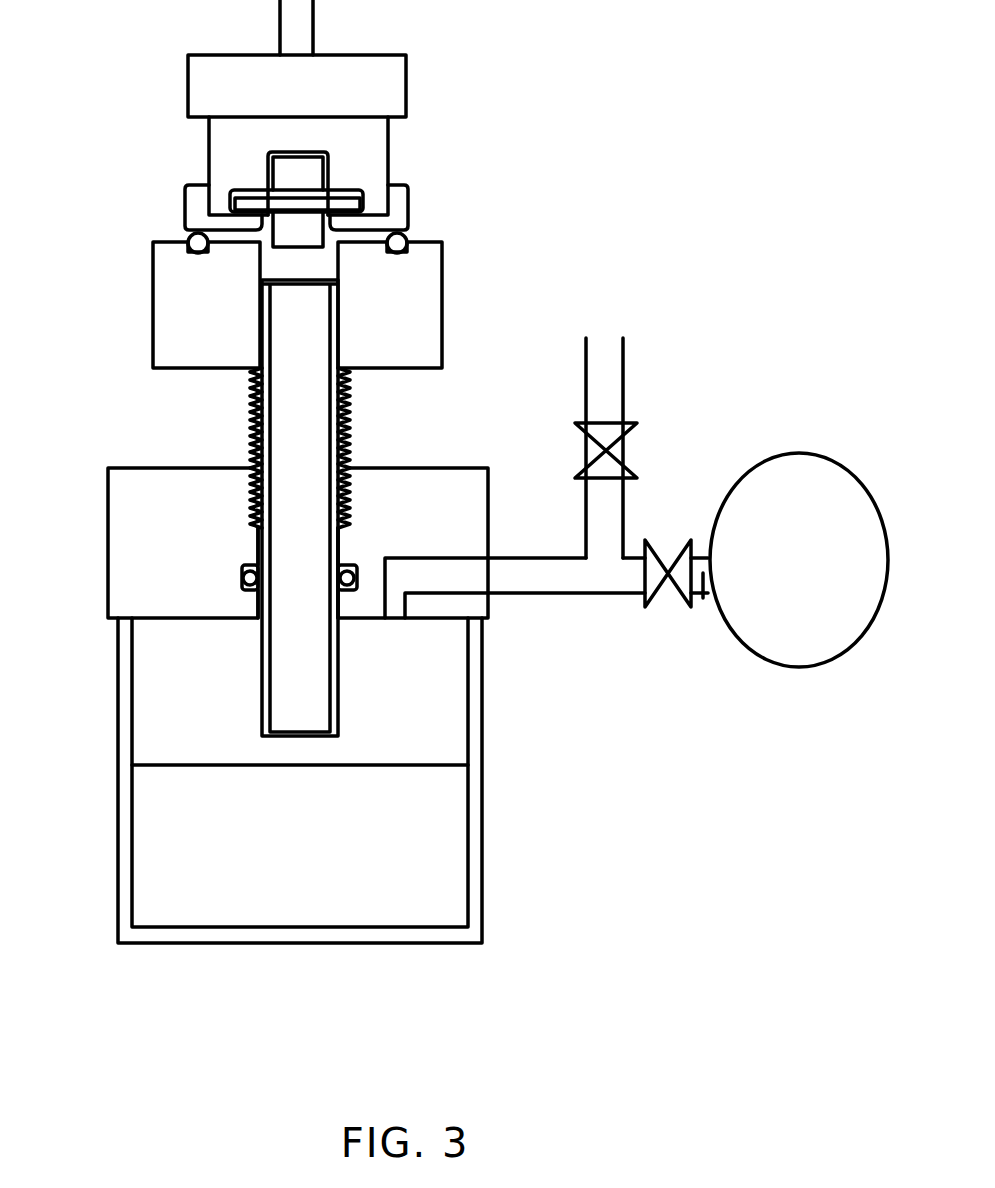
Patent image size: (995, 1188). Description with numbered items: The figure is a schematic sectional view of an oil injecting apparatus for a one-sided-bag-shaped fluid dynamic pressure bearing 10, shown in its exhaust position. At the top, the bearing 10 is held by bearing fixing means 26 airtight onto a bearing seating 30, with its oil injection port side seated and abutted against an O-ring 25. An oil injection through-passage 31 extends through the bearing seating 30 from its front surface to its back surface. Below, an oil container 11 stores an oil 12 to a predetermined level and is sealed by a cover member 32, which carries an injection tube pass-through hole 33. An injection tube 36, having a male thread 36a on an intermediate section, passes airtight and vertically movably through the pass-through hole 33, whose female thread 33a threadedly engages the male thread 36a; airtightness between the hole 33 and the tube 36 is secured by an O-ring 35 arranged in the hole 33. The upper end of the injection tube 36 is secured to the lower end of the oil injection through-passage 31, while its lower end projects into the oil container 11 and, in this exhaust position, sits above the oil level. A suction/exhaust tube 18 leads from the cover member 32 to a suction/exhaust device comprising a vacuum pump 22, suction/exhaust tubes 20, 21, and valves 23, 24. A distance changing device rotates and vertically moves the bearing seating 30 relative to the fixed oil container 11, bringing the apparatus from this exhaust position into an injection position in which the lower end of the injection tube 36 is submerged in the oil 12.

The one-sided-bag-shaped fluid dynamic pressure bearing 10 is at (368, 170).
The oil container 11 is at (469, 731).
The oil 12 is at (444, 866).
The suction/exhaust tube 18 is at (568, 578).
The suction/exhaust tube 20 is at (703, 598).
The suction/exhaust tube 21 is at (607, 388).
The vacuum pump 22 is at (797, 617).
The valve 23 is at (670, 597).
The valve 24 is at (613, 455).
The O-ring 25 is at (405, 237).
The bearing fixing means 26 is at (380, 85).
The bearing seating 30 is at (413, 323).
The oil injection through-passage 31 is at (250, 268).
The cover member 32 is at (128, 520).
The injection tube pass-through hole 33 is at (250, 548).
The female thread 33a is at (345, 490).
The O-ring 35 is at (240, 580).
The injection tube 36 is at (262, 680).
The male thread 36a is at (252, 435).